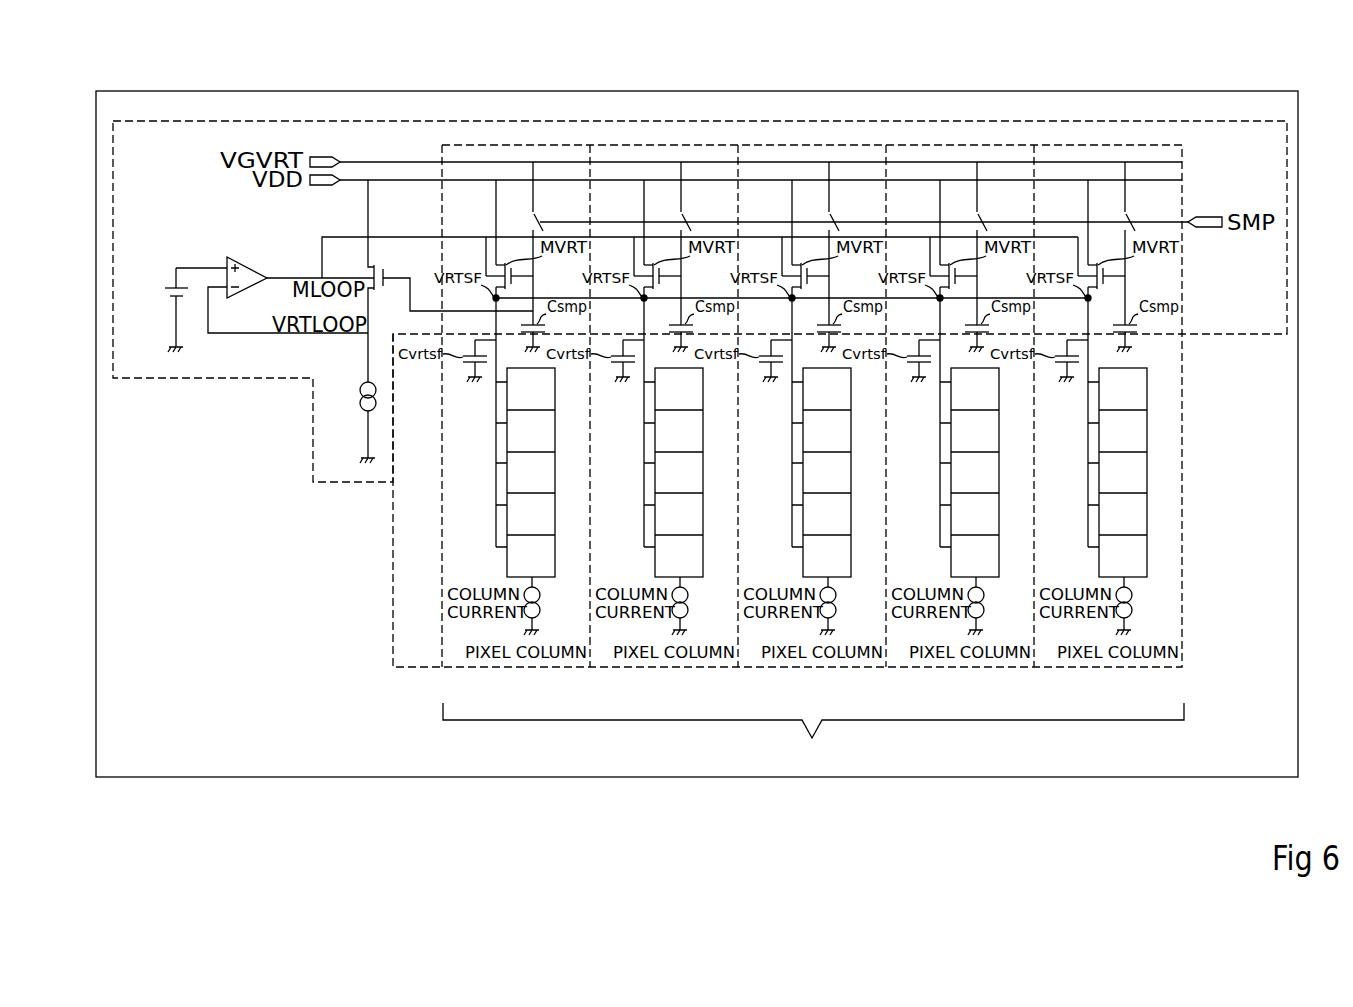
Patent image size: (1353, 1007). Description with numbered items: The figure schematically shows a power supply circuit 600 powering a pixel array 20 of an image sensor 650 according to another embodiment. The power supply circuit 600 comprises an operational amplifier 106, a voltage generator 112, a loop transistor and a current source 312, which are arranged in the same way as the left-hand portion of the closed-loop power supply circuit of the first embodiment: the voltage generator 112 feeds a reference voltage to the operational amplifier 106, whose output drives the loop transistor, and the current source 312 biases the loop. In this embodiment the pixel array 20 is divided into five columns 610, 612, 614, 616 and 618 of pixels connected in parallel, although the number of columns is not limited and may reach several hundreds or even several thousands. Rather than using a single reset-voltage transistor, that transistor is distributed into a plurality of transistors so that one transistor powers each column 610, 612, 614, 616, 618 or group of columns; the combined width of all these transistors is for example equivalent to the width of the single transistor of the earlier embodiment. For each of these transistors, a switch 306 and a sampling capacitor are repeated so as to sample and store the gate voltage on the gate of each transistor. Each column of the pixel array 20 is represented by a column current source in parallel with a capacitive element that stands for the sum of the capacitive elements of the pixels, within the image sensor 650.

The pixel array 20 is at (813, 735).
The operational amplifier 106 is at (275, 242).
The voltage generator 112 is at (162, 292).
The switch 306 is at (856, 196).
The current source 312 is at (360, 390).
The power supply circuit 600 is at (353, 120).
The column 610 is at (513, 668).
The column 612 is at (661, 668).
The column 614 is at (809, 668).
The column 616 is at (957, 668).
The column 618 is at (1182, 593).
The image sensor 650 is at (210, 91).